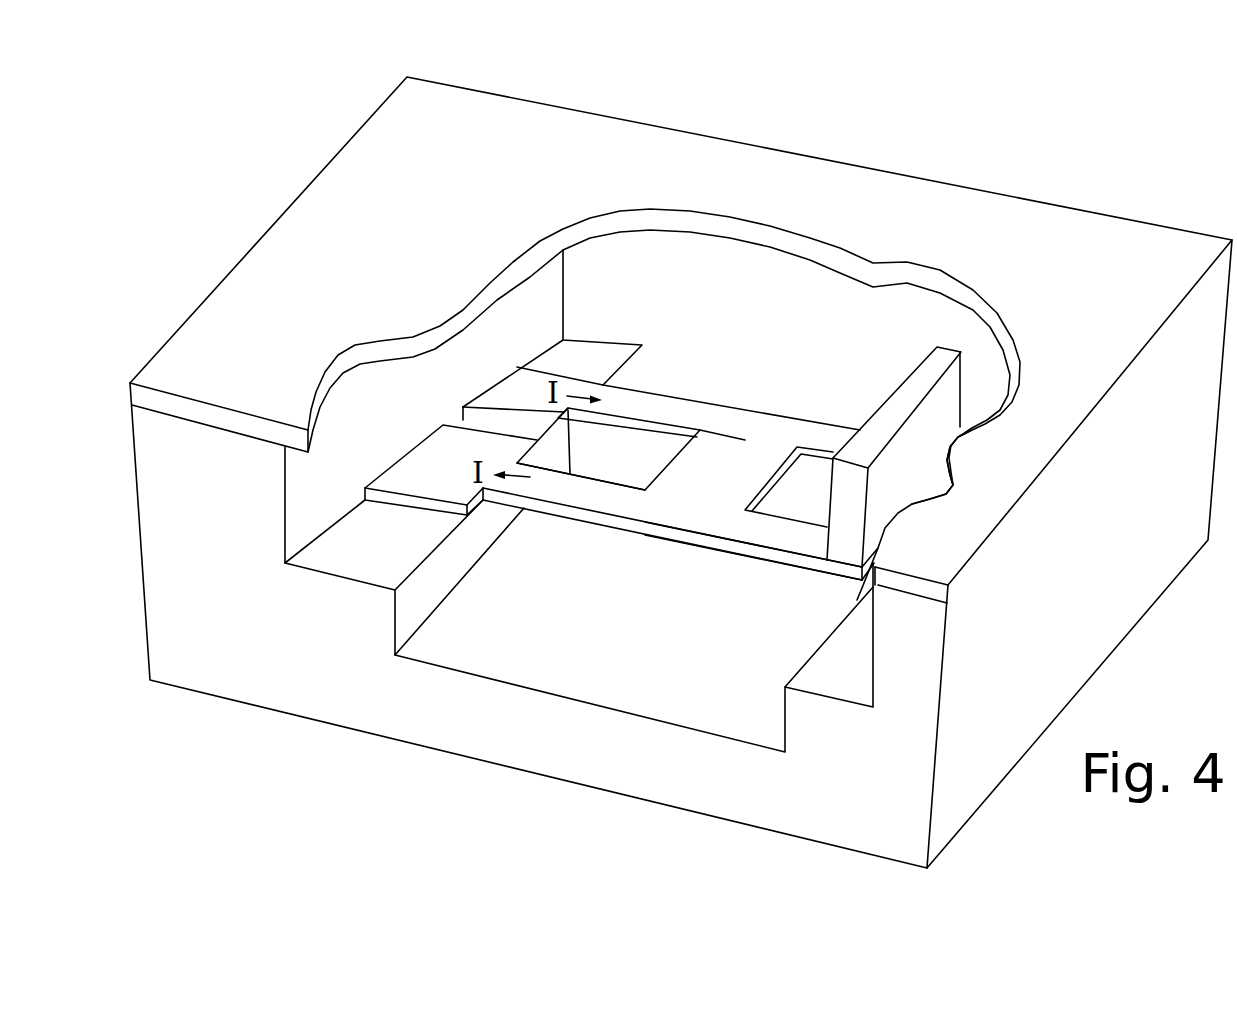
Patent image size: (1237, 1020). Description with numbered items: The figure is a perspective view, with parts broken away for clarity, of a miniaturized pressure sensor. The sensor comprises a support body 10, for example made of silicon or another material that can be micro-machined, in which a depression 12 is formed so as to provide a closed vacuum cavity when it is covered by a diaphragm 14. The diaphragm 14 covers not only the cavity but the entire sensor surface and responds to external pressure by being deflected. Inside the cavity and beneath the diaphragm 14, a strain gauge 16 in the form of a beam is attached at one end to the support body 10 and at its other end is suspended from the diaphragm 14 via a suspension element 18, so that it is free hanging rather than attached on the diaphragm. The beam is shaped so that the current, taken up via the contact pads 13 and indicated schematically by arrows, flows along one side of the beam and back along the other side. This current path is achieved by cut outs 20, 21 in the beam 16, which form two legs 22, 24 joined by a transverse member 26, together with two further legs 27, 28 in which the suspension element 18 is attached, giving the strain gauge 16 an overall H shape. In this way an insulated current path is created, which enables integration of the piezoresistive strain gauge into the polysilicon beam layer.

The support body 10 is at (272, 656).
The depression 12 is at (600, 608).
The contact pads 13 is at (455, 462).
The diaphragm 14 is at (993, 223).
The strain gauge 16 is at (788, 352).
The suspension element 18 is at (943, 405).
The cut out 20 is at (623, 458).
The cut out 21 is at (810, 493).
The leg 22 is at (595, 495).
The leg 24 is at (685, 420).
The transverse member 26 is at (725, 470).
The further leg 27 is at (835, 438).
The further leg 28 is at (780, 533).